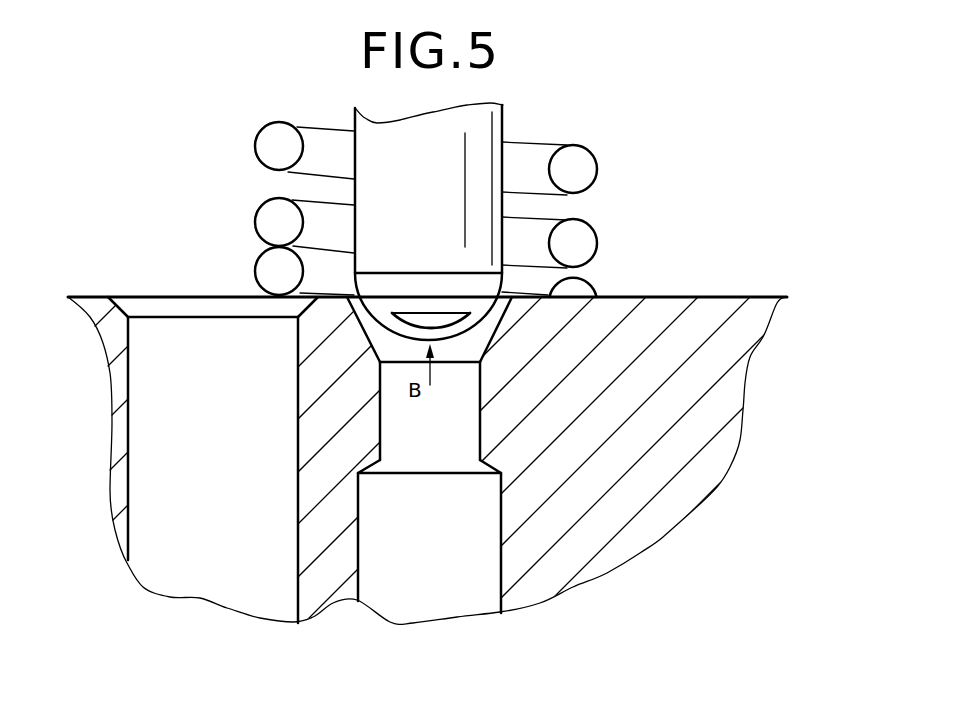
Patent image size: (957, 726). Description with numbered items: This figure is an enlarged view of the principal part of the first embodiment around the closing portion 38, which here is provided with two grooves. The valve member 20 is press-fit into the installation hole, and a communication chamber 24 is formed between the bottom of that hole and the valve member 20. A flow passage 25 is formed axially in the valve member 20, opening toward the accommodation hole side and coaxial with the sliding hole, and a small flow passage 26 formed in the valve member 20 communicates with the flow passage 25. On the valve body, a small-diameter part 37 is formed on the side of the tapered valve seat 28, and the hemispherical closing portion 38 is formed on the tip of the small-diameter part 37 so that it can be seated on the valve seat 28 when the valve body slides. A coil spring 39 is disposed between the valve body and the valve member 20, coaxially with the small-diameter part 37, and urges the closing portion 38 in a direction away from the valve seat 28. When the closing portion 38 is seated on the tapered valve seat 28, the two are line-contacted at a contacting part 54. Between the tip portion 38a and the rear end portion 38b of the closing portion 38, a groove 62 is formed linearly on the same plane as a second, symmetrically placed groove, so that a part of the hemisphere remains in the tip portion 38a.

The valve member 20 is at (710, 328).
The communication chamber 24 is at (807, 142).
The flow passage 25 is at (496, 570).
The small flow passage 26 is at (475, 428).
The valve seat 28 is at (372, 338).
The small-diameter part 37 is at (472, 178).
The closing portion 38 is at (367, 500).
The tip portion 38a is at (380, 362).
The rear end portion 38b is at (375, 305).
The coil spring 39 is at (277, 152).
The contacting part 54 is at (488, 308).
The groove 62 is at (472, 330).